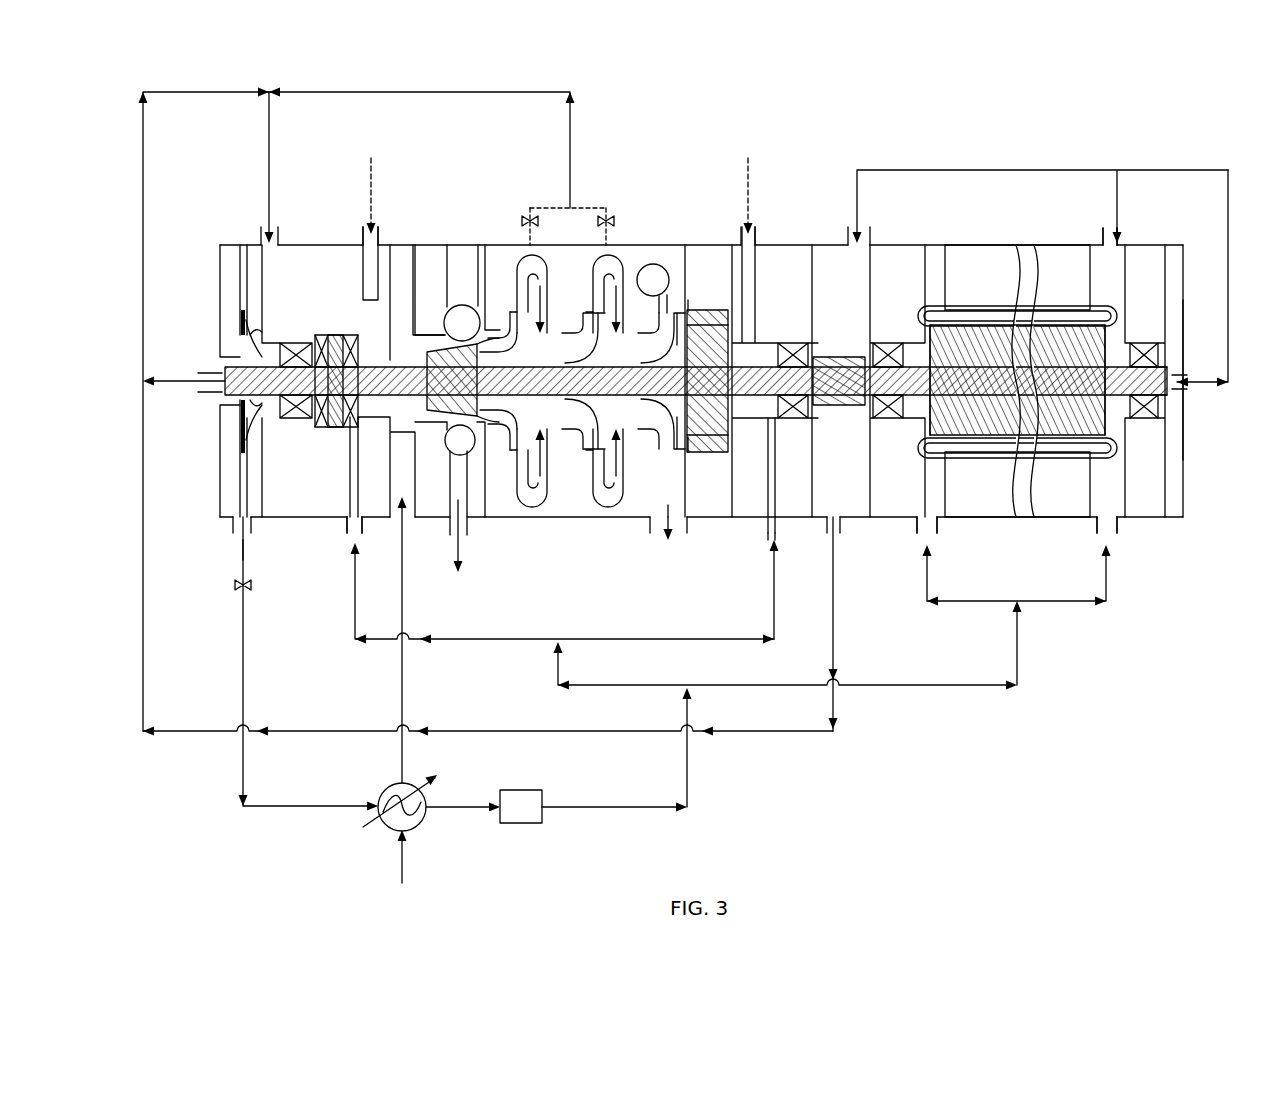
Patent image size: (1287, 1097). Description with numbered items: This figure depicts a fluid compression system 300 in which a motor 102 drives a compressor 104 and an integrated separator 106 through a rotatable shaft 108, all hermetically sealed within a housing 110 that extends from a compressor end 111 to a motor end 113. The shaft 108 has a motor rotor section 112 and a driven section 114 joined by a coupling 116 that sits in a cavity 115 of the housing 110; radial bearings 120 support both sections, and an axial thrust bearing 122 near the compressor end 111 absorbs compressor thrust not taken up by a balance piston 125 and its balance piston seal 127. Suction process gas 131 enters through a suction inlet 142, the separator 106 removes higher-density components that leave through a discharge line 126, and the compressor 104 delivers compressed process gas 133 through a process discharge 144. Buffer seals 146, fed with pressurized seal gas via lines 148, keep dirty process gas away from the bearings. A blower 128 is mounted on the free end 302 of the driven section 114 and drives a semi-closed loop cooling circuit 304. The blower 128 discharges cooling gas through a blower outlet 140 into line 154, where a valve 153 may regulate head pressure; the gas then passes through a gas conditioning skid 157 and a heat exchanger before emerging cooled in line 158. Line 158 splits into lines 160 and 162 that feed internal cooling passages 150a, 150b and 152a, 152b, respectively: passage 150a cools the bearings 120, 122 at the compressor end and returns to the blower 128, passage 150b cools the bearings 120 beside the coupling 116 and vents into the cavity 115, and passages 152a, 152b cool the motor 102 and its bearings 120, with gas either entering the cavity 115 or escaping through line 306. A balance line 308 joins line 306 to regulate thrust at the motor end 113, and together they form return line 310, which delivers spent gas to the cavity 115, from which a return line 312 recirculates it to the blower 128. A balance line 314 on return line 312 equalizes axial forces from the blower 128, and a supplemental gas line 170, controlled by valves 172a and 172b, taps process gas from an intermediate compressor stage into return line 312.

The fluid compression system 300 is at (1168, 115).
The motor 102 is at (1088, 392).
The compressor 104 is at (568, 515).
The integrated separator 106 is at (445, 345).
The rotatable shaft 108 is at (915, 312).
The housing 110 is at (973, 245).
The compressor end 111 is at (219, 503).
The motor rotor section 112 is at (1162, 400).
The motor end 113 is at (1185, 470).
The driven section 114 is at (796, 589).
The cavity 115 is at (862, 304).
The coupling 116 is at (835, 405).
The radial bearings 120 is at (296, 340).
The axial thrust bearing 122 is at (332, 335).
The balance piston 125 is at (710, 452).
The discharge line 126 is at (463, 545).
The balance piston seal 127 is at (668, 262).
The blower 128 is at (240, 320).
The process gas 131 is at (410, 608).
The compressed process gas 133 is at (672, 520).
The blower outlet 140 is at (257, 520).
The suction inlet 142 is at (405, 530).
The process discharge 144 is at (668, 545).
The buffer seals 146 is at (388, 300).
The seal gas lines 148 is at (371, 163).
The internal cooling passage 150a is at (350, 505).
The internal cooling passage 150b is at (775, 460).
The internal cooling passage 152a is at (915, 500).
The internal cooling passage 152b is at (1120, 500).
The valve 153 is at (228, 585).
The line 154 is at (240, 552).
The gas conditioning skid 157 is at (538, 819).
The line 158 is at (590, 807).
The line 160 is at (560, 660).
The line 162 is at (1018, 642).
The supplemental gas line 170 is at (412, 95).
The valve 172a is at (530, 215).
The valve 172b is at (614, 221).
The free end 302 is at (222, 400).
The semi-closed loop cooling circuit 304 is at (885, 702).
The line 306 is at (1120, 215).
The balance line 308 is at (1228, 222).
The return line 310 is at (996, 170).
The return line 312 is at (144, 172).
The balance line 314 is at (170, 382).